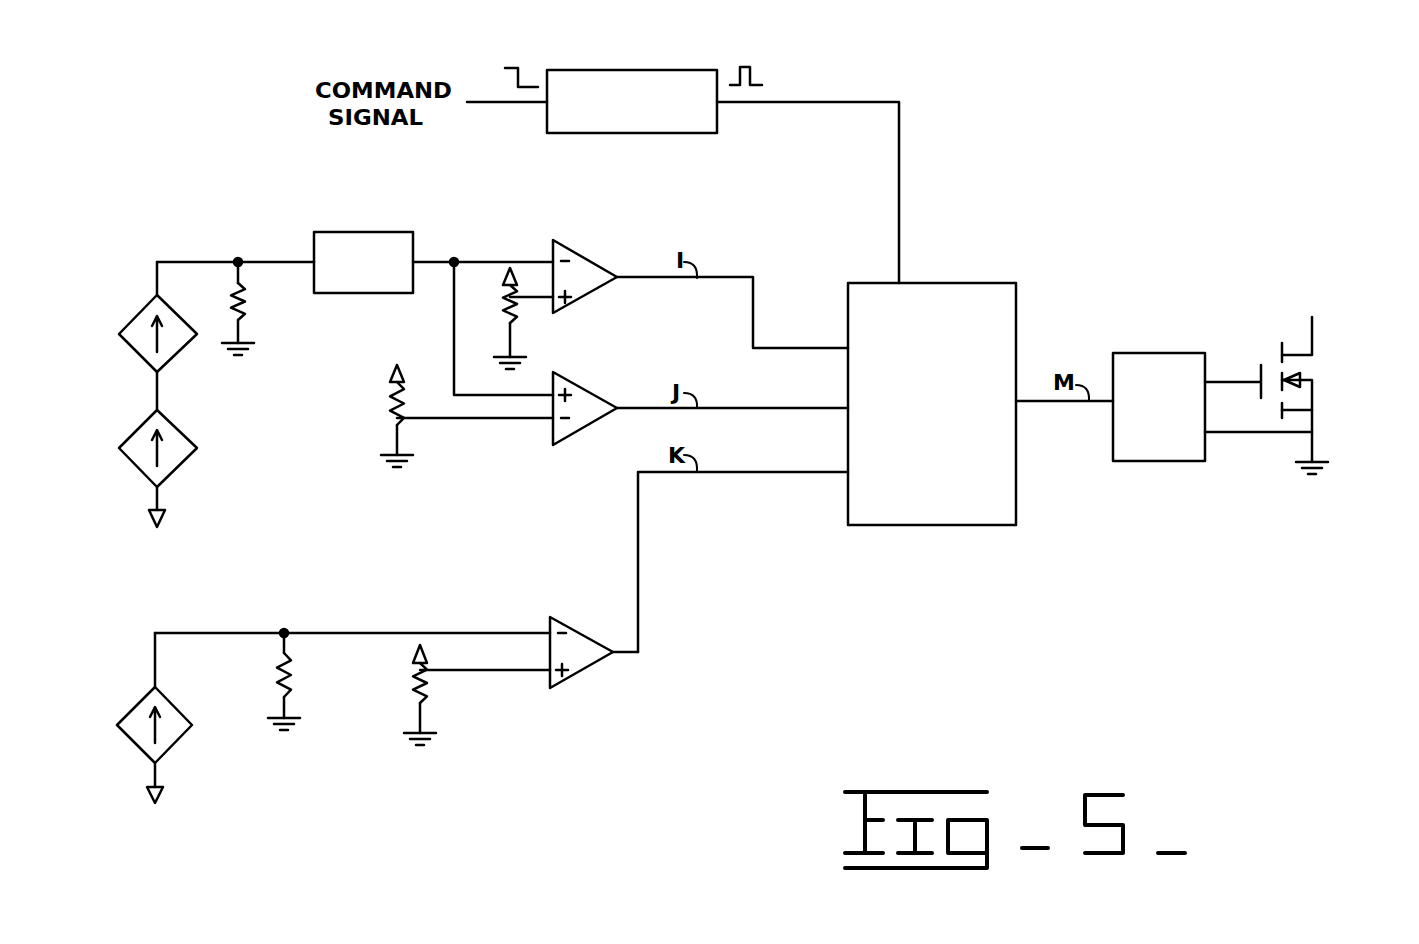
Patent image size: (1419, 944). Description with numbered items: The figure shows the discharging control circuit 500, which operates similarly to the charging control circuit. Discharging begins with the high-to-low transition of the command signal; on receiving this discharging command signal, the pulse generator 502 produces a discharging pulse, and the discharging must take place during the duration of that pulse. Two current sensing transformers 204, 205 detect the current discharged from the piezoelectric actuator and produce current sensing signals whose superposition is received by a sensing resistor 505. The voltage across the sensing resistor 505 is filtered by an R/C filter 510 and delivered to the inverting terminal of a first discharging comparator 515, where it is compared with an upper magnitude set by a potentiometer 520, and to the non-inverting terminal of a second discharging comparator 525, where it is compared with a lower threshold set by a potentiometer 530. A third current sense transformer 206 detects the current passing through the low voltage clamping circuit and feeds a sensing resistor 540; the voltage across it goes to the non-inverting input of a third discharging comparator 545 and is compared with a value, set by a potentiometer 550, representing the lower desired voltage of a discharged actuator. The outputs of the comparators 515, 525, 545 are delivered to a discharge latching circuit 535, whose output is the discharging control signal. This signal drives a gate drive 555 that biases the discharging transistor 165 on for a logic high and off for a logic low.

The pulse generator 502 is at (652, 70).
The R/C filter 510 is at (323, 232).
The sensing resistor 505 is at (243, 315).
The current sensing transformer 204 is at (150, 303).
The current sensing transformer 205 is at (150, 418).
The current sense transformer 206 is at (148, 695).
The first discharging comparator 515 is at (567, 246).
The potentiometer 520 is at (516, 318).
The second discharging comparator 525 is at (567, 378).
The potentiometer 530 is at (390, 413).
The discharge latching circuit 535 is at (872, 283).
The sensing resistor 540 is at (279, 690).
The third discharging comparator 545 is at (567, 617).
The potentiometer 550 is at (427, 698).
The gate drive 555 is at (1152, 353).
The discharging transistor 165 is at (1312, 340).
The discharging control circuit 500 is at (1078, 598).